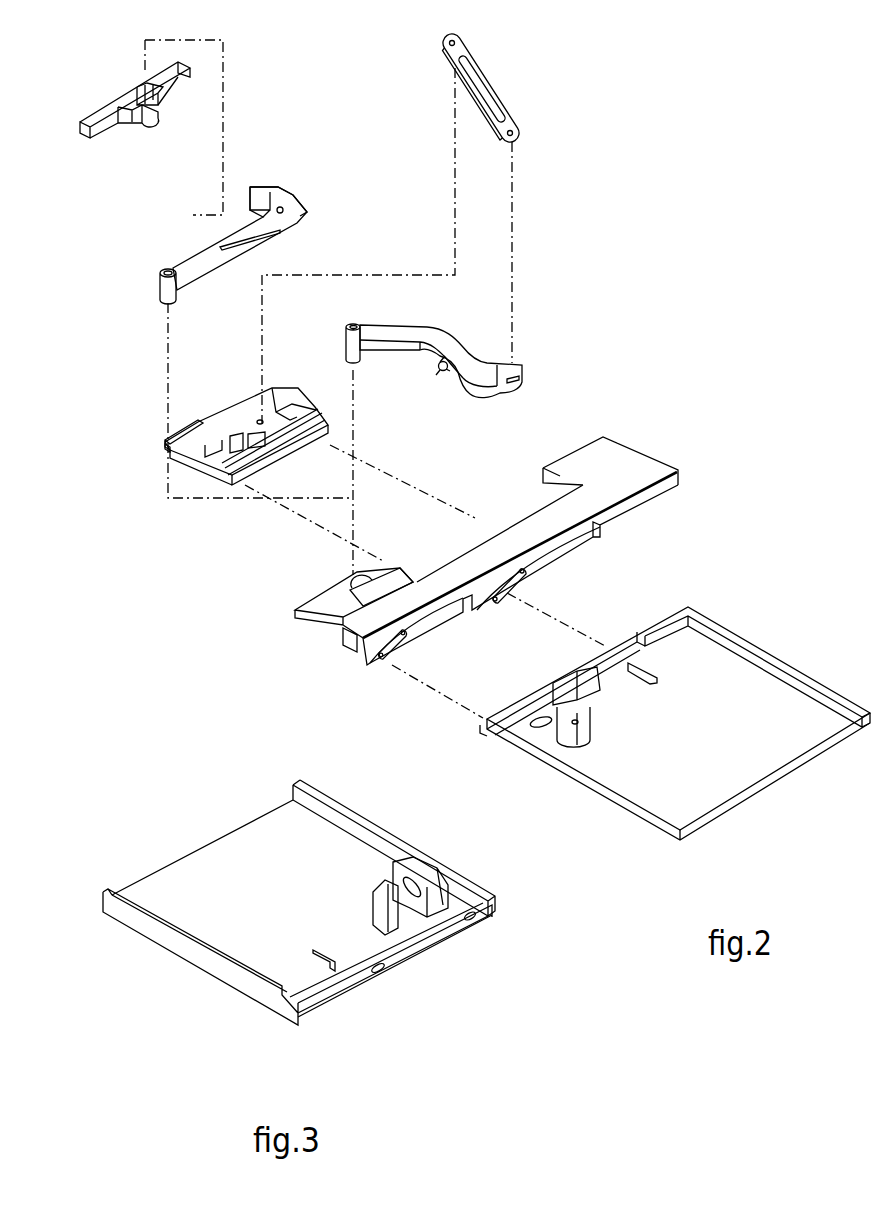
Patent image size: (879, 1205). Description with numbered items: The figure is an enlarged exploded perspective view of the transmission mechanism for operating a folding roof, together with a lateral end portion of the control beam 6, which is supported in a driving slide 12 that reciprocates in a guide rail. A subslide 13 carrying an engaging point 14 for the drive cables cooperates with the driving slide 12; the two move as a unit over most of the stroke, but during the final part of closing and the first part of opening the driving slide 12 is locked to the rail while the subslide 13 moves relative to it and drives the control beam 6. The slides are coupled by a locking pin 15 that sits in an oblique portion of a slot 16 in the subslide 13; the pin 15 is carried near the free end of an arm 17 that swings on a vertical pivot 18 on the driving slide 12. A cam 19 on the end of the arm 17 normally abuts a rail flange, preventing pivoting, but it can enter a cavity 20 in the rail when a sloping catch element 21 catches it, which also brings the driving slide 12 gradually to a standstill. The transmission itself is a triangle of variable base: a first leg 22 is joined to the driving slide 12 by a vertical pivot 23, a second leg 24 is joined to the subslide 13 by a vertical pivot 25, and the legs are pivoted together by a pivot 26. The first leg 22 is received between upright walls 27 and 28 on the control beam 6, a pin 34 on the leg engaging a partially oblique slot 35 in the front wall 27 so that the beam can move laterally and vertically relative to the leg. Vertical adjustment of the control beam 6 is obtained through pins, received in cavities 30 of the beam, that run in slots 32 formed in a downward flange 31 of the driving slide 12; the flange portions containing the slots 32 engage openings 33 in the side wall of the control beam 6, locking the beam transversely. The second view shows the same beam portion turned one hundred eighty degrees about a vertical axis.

In FIG. 2, the control beam 6 is at (713, 803).
In FIG. 3, the control beam 6 is at (165, 910).
In FIG. 2, the driving slide 12 is at (317, 625).
In FIG. 2, the subslide 13 is at (197, 460).
In FIG. 2, the engaging point 14 is at (162, 442).
In FIG. 2, the pin 15 is at (262, 208).
In FIG. 2, the slot 16 is at (168, 448).
In FIG. 2, the arm 17 is at (193, 257).
In FIG. 2, the vertical pivot 18 is at (160, 284).
In FIG. 2, the cam 19 is at (250, 197).
In FIG. 2, the cavity 20 is at (137, 90).
In FIG. 2, the catch element 21 is at (132, 117).
In FIG. 2, the first leg 22 is at (447, 345).
In FIG. 2, the vertical pivot 23 is at (360, 327).
In FIG. 2, the second leg 24 is at (483, 90).
In FIG. 2, the vertical pivot 25 is at (455, 158).
In FIG. 2, the pivot 26 is at (512, 190).
In FIG. 2, the front upright wall 27 is at (570, 697).
In FIG. 3, the front upright wall 27 is at (430, 897).
In FIG. 2, the upright wall 28 is at (587, 700).
In FIG. 3, the upright wall 28 is at (392, 913).
In FIG. 2, the cavities 30 is at (652, 683).
In FIG. 2, the flange 31 is at (668, 492).
In FIG. 2, the slots 32 is at (530, 568).
In FIG. 3, the openings 33 is at (383, 970).
In FIG. 2, the pin 34 is at (443, 366).
In FIG. 2, the slot 35 is at (540, 727).
In FIG. 3, the slot 35 is at (400, 880).